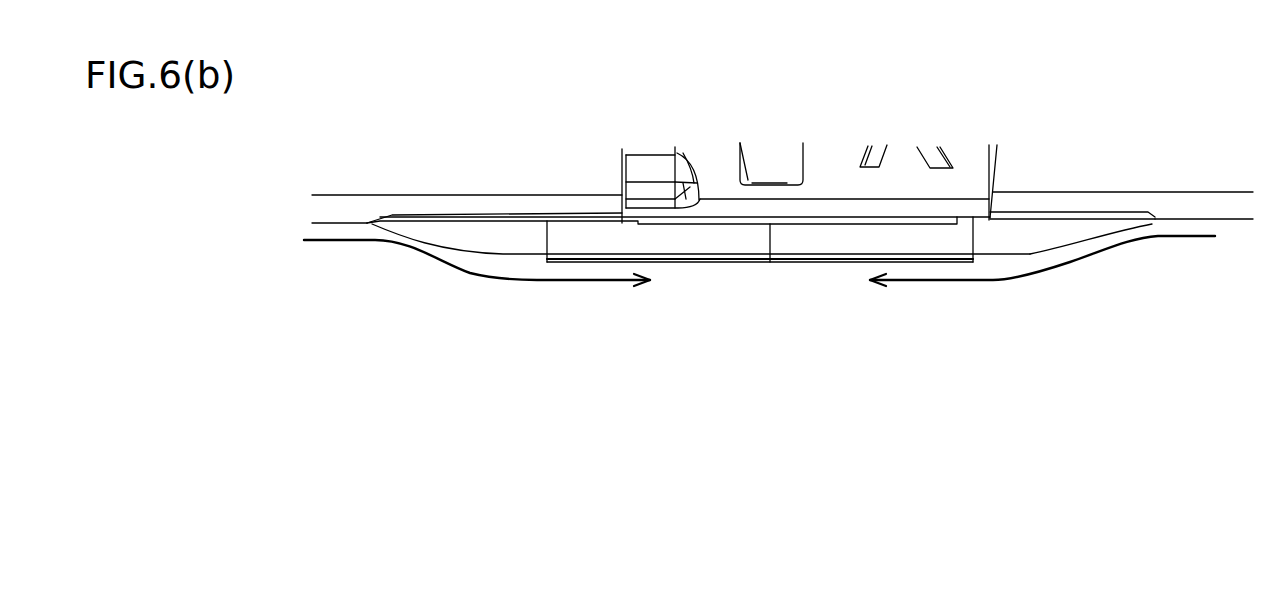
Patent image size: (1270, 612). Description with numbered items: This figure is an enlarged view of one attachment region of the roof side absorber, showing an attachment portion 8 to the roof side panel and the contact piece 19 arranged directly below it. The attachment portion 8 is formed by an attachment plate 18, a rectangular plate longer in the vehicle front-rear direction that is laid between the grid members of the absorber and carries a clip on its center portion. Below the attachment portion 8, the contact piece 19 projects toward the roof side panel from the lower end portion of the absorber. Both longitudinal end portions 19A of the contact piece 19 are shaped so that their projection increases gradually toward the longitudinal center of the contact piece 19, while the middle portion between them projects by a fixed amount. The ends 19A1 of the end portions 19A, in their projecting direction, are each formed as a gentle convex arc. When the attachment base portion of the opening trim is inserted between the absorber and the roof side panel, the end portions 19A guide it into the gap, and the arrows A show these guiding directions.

The attachment portion 8 is at (706, 126).
The attachment plate 18 is at (837, 163).
The contact piece 19 is at (763, 264).
The longitudinal end portion 19A is at (492, 238).
The end 19A1 is at (438, 245).
The arrow A is at (575, 285).